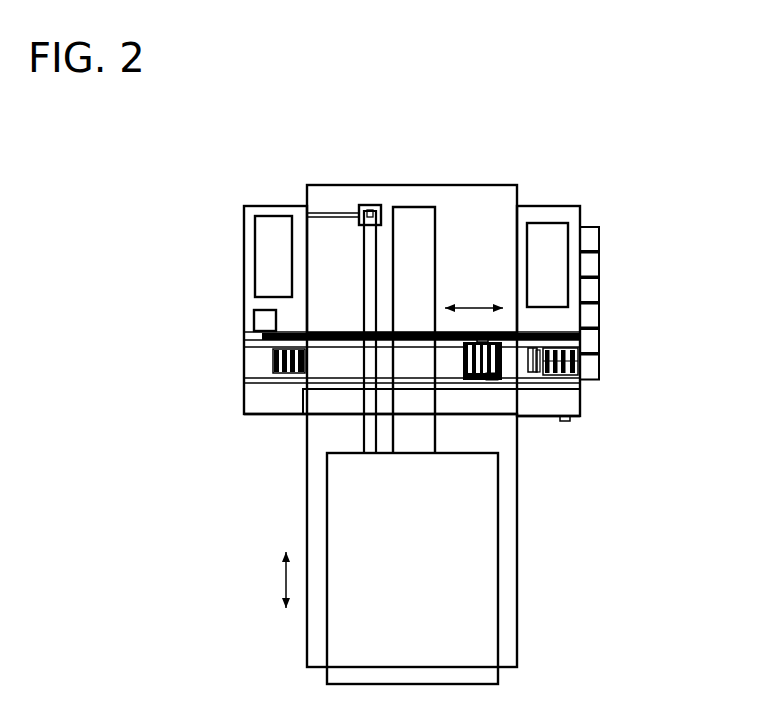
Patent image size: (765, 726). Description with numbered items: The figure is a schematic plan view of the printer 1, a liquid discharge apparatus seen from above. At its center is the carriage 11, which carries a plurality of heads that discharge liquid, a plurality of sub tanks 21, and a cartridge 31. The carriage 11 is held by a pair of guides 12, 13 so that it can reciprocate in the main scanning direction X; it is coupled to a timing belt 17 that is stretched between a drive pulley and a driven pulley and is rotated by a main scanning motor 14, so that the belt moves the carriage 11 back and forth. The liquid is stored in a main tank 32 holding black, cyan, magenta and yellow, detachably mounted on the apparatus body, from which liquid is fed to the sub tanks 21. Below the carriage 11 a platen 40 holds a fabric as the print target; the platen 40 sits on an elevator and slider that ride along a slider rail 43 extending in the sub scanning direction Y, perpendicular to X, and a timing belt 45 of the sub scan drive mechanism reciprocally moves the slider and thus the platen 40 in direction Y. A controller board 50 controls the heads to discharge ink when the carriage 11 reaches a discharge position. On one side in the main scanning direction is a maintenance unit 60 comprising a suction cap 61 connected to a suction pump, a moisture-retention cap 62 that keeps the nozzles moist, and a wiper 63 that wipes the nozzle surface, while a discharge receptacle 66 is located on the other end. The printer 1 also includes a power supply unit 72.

The printer 1 is at (394, 128).
The carriage 11 is at (500, 367).
The guide 12 is at (252, 342).
The guide 13 is at (273, 385).
The main scanning motor 14 is at (257, 322).
The timing belt 17 is at (300, 335).
The sub tank 21 is at (485, 376).
The cartridge 31 is at (490, 380).
The main tank 32 is at (597, 242).
The platen 40 is at (472, 601).
The slider rail 43 is at (418, 218).
The timing belt 45 is at (363, 237).
The controller board 50 is at (541, 233).
The maintenance unit 60 is at (578, 347).
The suction cap 61 is at (553, 363).
The moisture-retention cap 62 is at (578, 365).
The wiper 63 is at (536, 364).
The discharge receptacle 66 is at (272, 360).
The power supply unit 72 is at (272, 225).